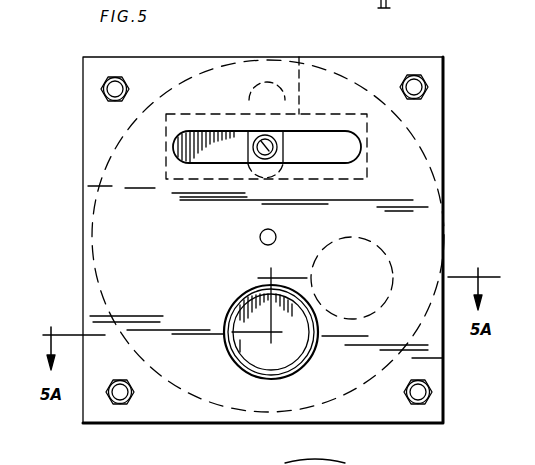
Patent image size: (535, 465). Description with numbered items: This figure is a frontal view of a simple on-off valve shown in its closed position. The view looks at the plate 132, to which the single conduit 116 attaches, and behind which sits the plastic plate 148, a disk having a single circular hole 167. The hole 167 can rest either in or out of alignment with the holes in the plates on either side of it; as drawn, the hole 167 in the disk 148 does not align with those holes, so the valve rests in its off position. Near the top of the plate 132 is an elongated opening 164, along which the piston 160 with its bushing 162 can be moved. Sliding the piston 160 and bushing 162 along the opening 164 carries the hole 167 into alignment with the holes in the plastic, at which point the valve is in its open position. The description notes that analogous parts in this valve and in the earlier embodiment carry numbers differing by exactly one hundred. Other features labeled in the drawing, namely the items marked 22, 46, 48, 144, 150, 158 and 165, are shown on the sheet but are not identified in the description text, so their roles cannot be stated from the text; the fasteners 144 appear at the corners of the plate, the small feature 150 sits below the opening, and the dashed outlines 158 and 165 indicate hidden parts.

The apparatus 22 is at (403, 7).
The bracket 46 is at (315, 4).
The fastener 48 is at (378, 8).
The single conduit 116 is at (252, 288).
The plate 132 is at (443, 385).
The mounting nuts 144 is at (101, 97).
The plastic plate 148 is at (395, 178).
The hole 150 is at (276, 231).
The hidden boss 158 is at (250, 100).
The piston 160 is at (160, 88).
The bushing 162 is at (248, 162).
The opening 164 is at (310, 147).
The hidden outline 165 is at (298, 53).
The circular hole 167 is at (355, 262).